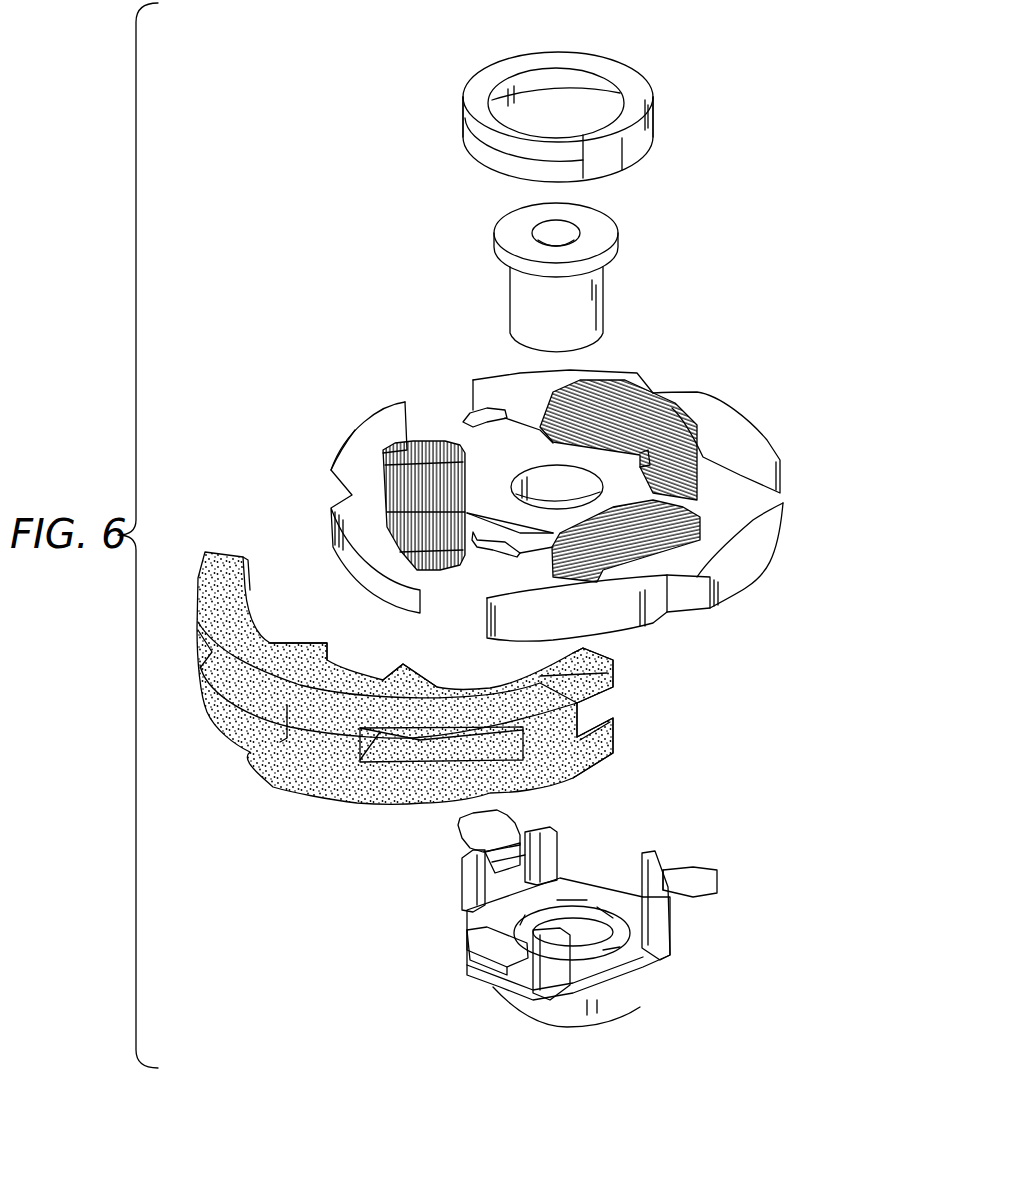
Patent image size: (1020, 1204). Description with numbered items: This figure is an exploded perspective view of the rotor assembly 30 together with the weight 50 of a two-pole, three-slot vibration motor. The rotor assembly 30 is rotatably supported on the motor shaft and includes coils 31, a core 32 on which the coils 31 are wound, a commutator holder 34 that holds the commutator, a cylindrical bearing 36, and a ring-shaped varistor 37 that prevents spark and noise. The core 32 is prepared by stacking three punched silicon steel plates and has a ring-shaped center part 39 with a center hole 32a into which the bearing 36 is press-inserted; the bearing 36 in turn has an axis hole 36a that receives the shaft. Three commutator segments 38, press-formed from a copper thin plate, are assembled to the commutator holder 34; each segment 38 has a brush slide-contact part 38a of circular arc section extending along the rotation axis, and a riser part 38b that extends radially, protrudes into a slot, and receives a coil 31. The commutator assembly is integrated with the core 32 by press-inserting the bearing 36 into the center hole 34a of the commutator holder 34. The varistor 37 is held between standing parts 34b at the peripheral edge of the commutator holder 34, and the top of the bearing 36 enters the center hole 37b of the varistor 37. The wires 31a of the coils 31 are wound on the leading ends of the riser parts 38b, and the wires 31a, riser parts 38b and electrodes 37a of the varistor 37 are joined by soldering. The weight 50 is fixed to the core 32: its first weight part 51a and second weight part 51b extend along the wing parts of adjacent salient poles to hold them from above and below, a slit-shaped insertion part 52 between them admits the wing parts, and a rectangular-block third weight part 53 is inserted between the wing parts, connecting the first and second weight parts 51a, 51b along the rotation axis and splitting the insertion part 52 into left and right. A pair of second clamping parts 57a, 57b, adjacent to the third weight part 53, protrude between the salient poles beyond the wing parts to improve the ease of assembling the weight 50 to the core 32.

The rotor assembly 30 is at (385, 282).
The coils 31 is at (647, 403).
The wires 31a is at (453, 437).
The core 32 is at (740, 407).
The center hole 32a is at (547, 477).
The commutator holder 34 is at (607, 883).
The center hole 34a is at (587, 938).
The standing parts 34b is at (537, 828).
The cylindrical bearing 36 is at (605, 295).
The axis hole 36a is at (567, 231).
The varistor 37 is at (585, 62).
The electrodes 37a is at (553, 60).
The center hole 37b is at (578, 107).
The commutator segments 38 is at (455, 829).
The brush slide-contact part 38a is at (617, 1000).
The riser part 38b is at (693, 880).
The ring-shaped center part 39 is at (507, 460).
The weight 50 is at (243, 767).
The first weight part 51a is at (613, 750).
The second weight part 51b is at (607, 673).
The insertion part 52 is at (605, 700).
The third weight part 53 is at (320, 750).
The second clamping part 57a is at (410, 663).
The second clamping part 57b is at (320, 640).